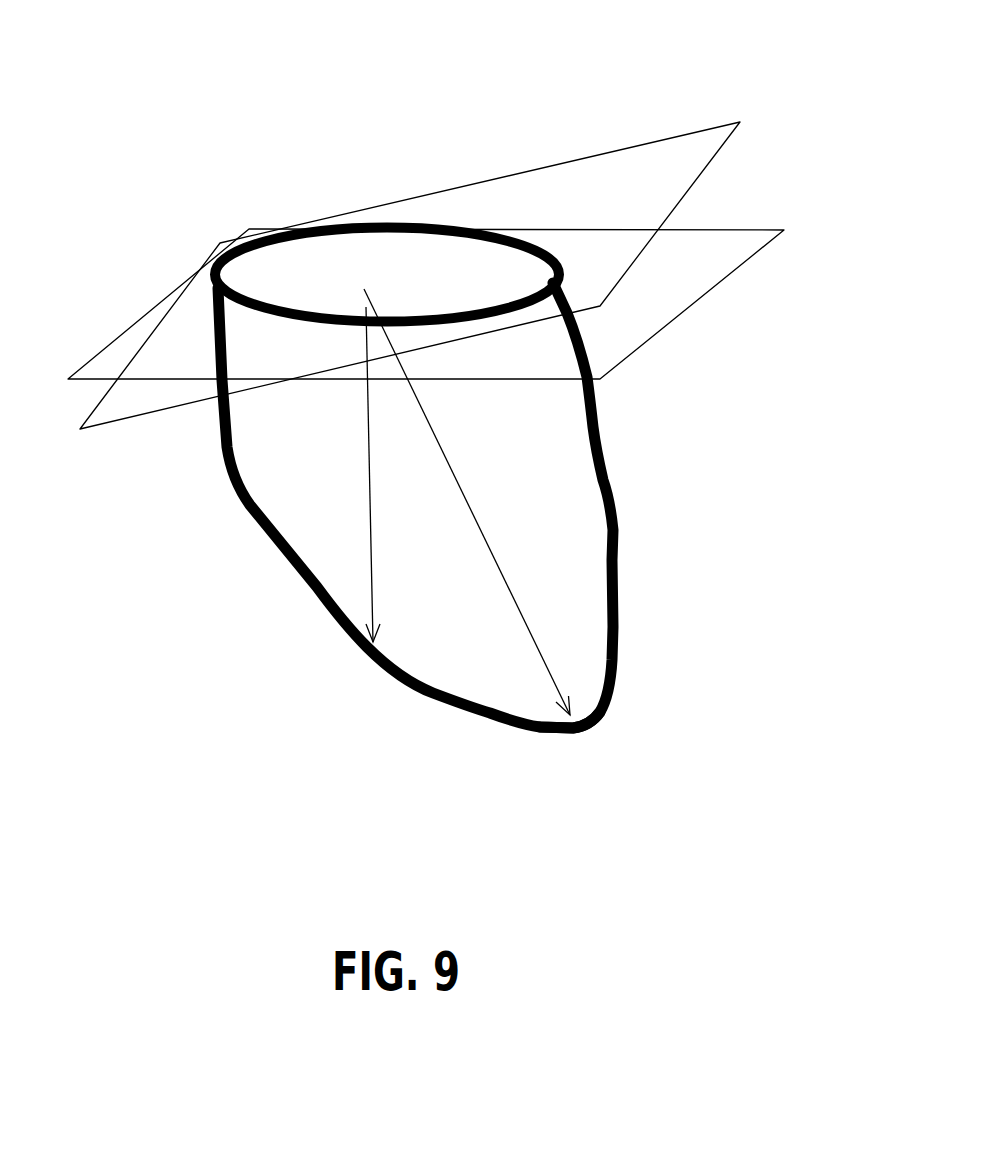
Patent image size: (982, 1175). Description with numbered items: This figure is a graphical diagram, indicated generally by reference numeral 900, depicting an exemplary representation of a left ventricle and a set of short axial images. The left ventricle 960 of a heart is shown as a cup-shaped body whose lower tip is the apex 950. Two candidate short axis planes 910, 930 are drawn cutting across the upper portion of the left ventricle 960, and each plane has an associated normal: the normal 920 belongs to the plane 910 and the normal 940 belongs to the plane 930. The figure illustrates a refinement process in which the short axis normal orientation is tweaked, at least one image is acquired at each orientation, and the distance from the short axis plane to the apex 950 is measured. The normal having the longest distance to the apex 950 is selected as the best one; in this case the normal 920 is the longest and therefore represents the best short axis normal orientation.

The representation of a left ventricle and a set of short axial images 900 is at (457, 107).
The candidate short axis plane 910 is at (733, 133).
The normal 920 is at (488, 545).
The candidate short axis plane 930 is at (757, 250).
The normal 940 is at (368, 533).
The apex 950 is at (588, 751).
The left ventricle 960 is at (263, 533).